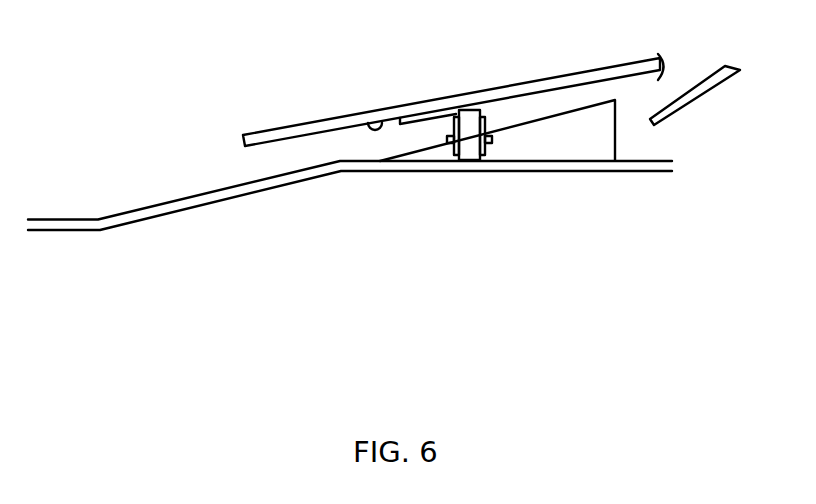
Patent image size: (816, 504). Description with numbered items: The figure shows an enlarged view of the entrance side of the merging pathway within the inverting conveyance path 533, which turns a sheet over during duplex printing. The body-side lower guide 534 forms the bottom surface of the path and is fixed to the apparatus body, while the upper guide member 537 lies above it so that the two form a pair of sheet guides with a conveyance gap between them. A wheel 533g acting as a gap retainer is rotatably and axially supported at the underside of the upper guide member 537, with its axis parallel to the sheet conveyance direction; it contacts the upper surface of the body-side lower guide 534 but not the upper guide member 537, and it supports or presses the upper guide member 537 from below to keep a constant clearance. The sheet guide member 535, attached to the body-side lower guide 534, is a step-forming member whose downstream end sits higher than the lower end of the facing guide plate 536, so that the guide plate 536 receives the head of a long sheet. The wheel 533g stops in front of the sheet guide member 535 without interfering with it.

The inverting conveyance path 533 is at (308, 147).
The wheel 533g is at (466, 128).
The body-side lower guide 534 is at (208, 205).
The sheet guide member 535 is at (585, 117).
The guide plate 536 is at (690, 97).
The upper guide member 537 is at (366, 124).